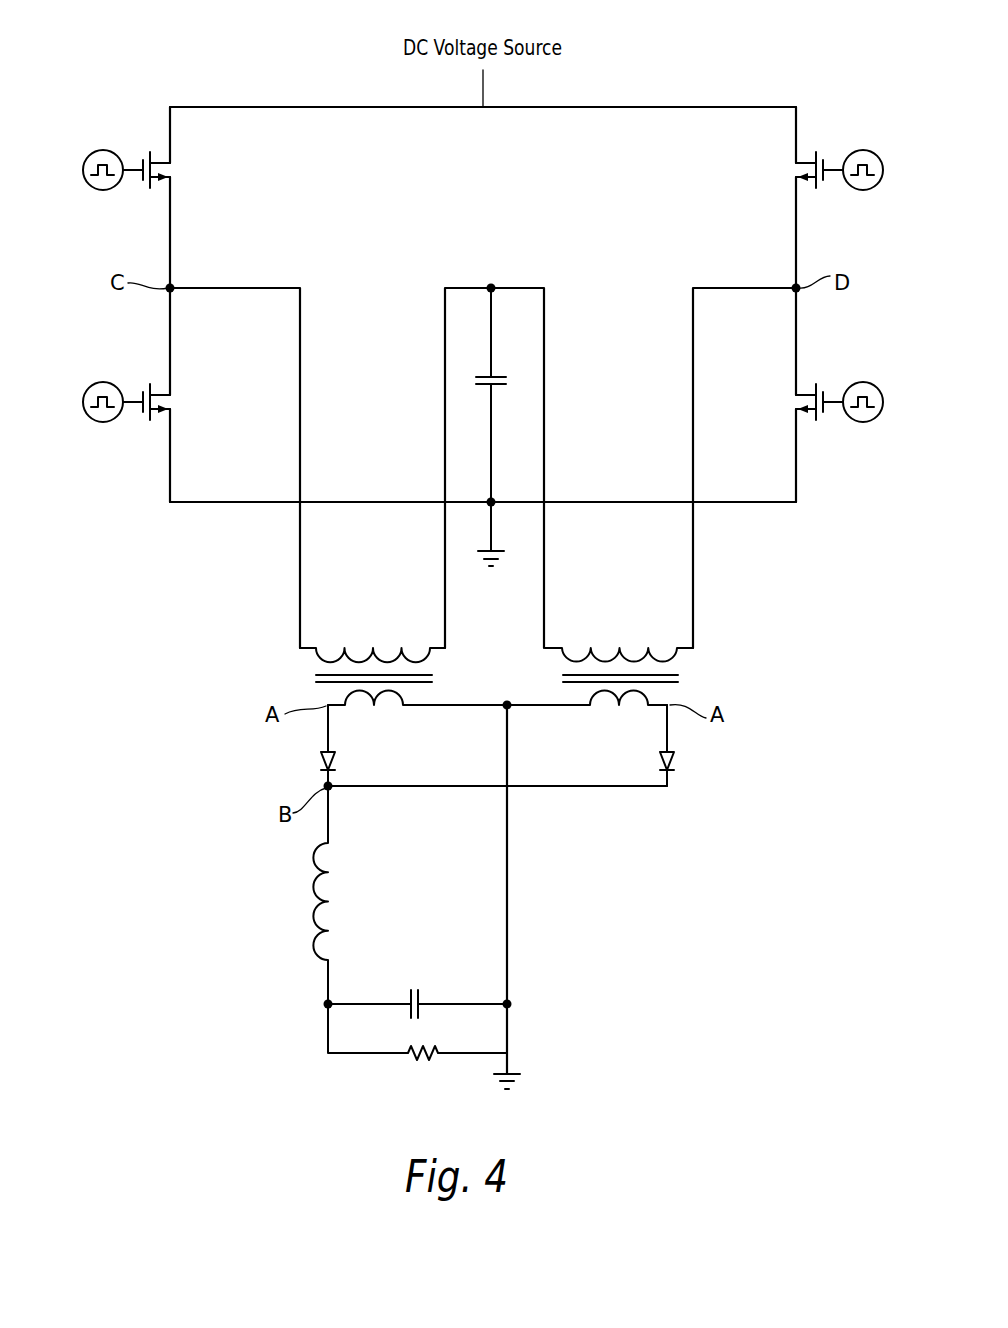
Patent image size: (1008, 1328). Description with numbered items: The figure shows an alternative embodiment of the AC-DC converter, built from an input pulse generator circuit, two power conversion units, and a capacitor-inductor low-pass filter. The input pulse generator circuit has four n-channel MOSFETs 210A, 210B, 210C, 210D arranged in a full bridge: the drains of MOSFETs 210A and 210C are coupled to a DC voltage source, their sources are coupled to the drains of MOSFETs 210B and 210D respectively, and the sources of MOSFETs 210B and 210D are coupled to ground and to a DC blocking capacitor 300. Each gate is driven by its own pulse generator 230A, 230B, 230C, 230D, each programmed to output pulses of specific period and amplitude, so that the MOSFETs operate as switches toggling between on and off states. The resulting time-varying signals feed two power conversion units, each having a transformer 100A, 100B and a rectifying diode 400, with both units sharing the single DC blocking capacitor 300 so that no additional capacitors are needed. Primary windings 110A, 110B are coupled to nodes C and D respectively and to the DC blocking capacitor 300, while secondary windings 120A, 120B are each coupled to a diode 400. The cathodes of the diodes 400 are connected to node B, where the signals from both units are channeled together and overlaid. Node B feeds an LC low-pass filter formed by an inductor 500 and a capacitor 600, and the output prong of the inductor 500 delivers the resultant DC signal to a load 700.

The n-channel MOSFET 210A is at (146, 158).
The n-channel MOSFET 210B is at (146, 388).
The n-channel MOSFET 210C is at (824, 158).
The n-channel MOSFET 210D is at (818, 416).
The pulse generator 230A is at (103, 191).
The pulse generator 230B is at (103, 423).
The pulse generator 230C is at (864, 191).
The pulse generator 230D is at (866, 381).
The DC blocking capacitor 300 is at (498, 376).
The transformer 100A is at (345, 678).
The transformer 100B is at (651, 678).
The primary winding 110A is at (383, 655).
The primary winding 110B is at (630, 655).
The secondary winding 120A is at (376, 702).
The secondary winding 120B is at (619, 702).
The rectifying diode 400 is at (324, 762).
The inductor 500 is at (314, 900).
The capacitor 600 is at (414, 989).
The load 700 is at (423, 1058).